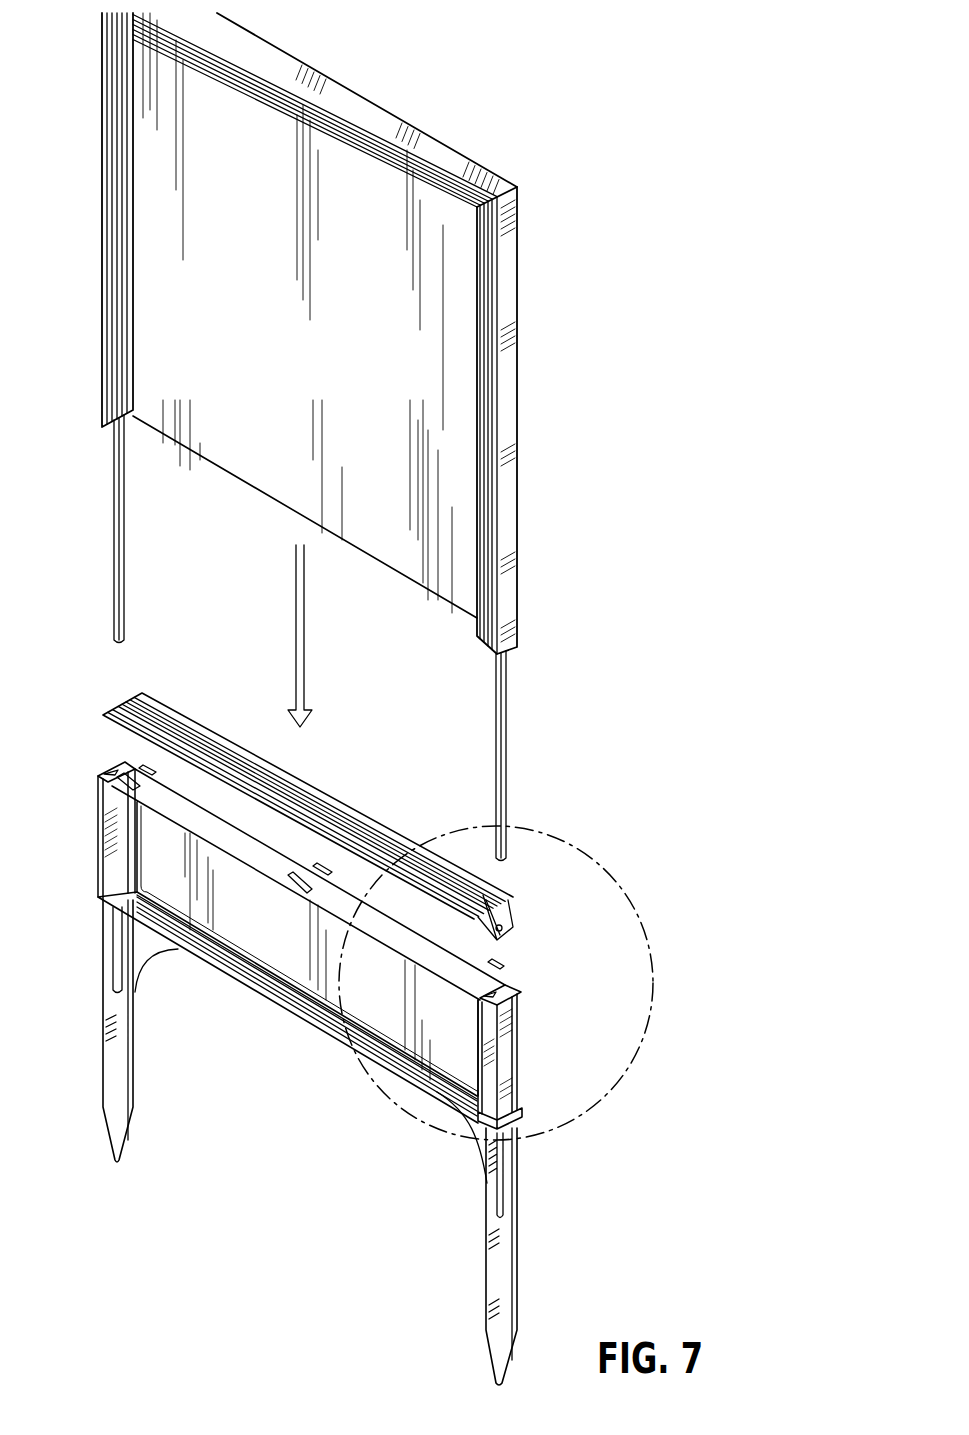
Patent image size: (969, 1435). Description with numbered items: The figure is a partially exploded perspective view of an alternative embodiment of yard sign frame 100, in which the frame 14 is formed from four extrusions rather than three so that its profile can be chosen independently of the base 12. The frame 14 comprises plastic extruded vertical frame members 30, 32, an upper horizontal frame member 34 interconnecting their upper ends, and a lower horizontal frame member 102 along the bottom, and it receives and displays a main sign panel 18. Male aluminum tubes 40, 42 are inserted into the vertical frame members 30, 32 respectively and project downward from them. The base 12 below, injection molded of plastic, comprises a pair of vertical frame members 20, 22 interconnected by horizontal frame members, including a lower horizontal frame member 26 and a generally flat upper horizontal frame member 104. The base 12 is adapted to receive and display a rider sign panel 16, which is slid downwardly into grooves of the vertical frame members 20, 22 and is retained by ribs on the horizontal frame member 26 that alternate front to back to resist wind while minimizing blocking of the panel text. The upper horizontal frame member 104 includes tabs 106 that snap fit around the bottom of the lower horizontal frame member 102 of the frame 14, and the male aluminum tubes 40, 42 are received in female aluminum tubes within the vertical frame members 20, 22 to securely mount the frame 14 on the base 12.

The yard sign frame 100 is at (578, 102).
The base 12 is at (321, 1052).
The frame 14 is at (318, 556).
The rider sign panel 16 is at (172, 875).
The main sign panel 18 is at (278, 416).
The vertical frame member 20 is at (517, 1272).
The vertical frame member 22 is at (103, 1067).
The horizontal frame member 26 is at (293, 1008).
The vertical frame member 30 is at (508, 502).
The vertical frame member 32 is at (104, 218).
The upper horizontal frame member 34 is at (325, 82).
The male aluminum tube 40 is at (509, 750).
The male aluminum tube 42 is at (122, 537).
The lower horizontal frame member 102 is at (307, 790).
The upper horizontal frame member 104 is at (162, 806).
The tab 106 is at (142, 767).